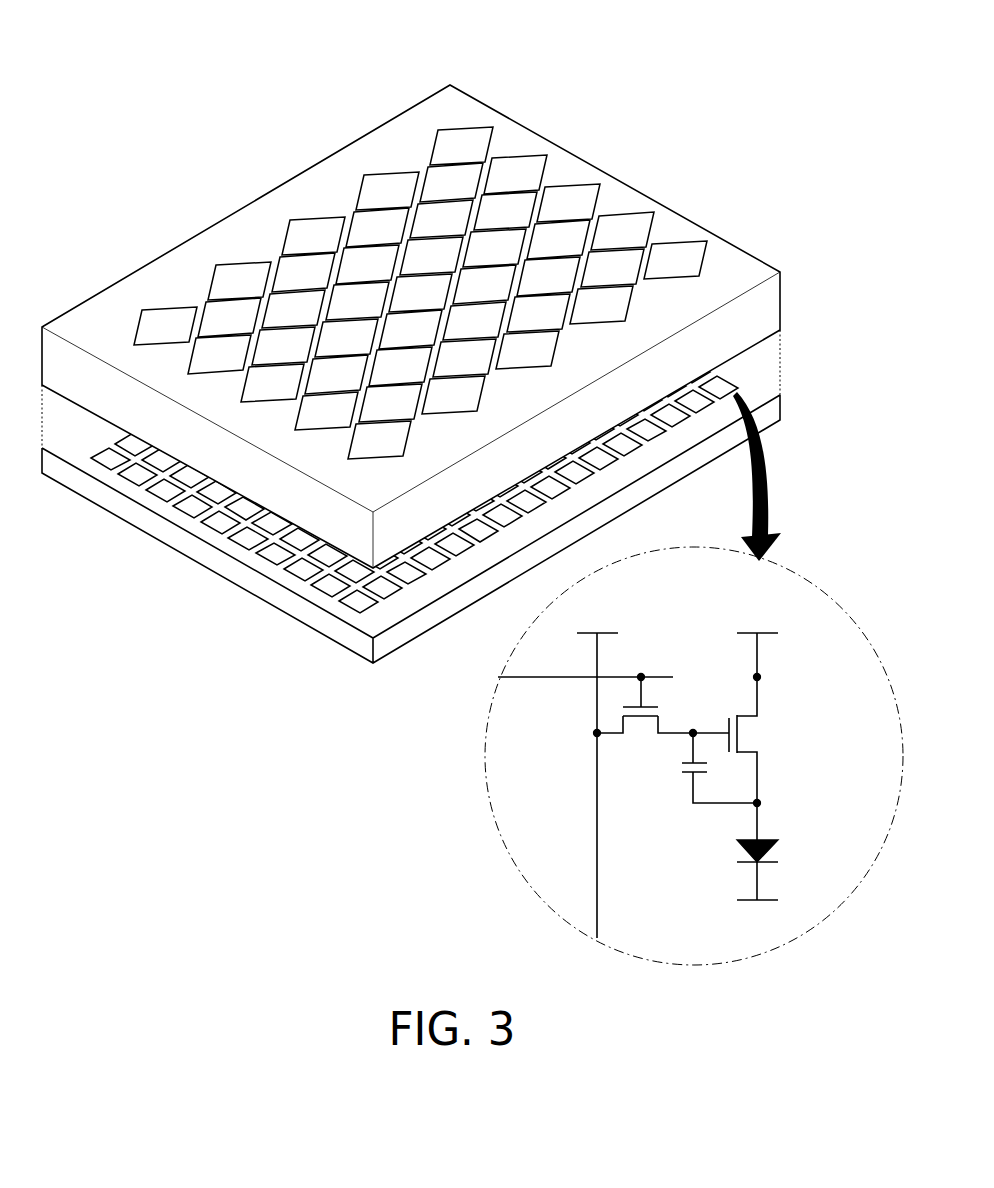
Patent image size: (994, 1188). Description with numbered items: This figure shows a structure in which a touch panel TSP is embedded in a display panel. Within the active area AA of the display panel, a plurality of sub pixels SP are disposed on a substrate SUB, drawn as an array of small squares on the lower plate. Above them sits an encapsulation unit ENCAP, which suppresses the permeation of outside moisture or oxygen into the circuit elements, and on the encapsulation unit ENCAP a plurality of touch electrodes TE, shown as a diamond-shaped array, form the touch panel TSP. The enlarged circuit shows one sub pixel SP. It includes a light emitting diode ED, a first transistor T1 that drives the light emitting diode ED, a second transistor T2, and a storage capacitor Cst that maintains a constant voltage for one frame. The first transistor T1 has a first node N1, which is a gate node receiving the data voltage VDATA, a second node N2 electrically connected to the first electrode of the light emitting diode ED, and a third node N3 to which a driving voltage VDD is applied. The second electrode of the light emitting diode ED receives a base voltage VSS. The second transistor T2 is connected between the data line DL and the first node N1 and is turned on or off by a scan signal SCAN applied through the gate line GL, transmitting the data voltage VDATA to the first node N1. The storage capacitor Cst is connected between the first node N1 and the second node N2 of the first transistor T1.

The active area AA is at (742, 53).
The touch panel TSP is at (251, 188).
The touch electrode TE is at (677, 250).
The encapsulation unit ENCAP is at (781, 304).
The sub pixel SP is at (745, 374).
The substrate SUB is at (782, 410).
The data voltage VDATA is at (596, 620).
The data line DL is at (580, 785).
The gate line GL is at (585, 694).
The scan signal SCAN is at (642, 677).
The second transistor T2 is at (644, 734).
The first node N1 is at (703, 720).
The first transistor T1 is at (758, 740).
The driving voltage VDD is at (759, 642).
The third node N3 is at (775, 680).
The storage capacitor Cst is at (719, 768).
The second node N2 is at (775, 805).
The light emitting diode ED is at (775, 851).
The base voltage VSS is at (757, 916).